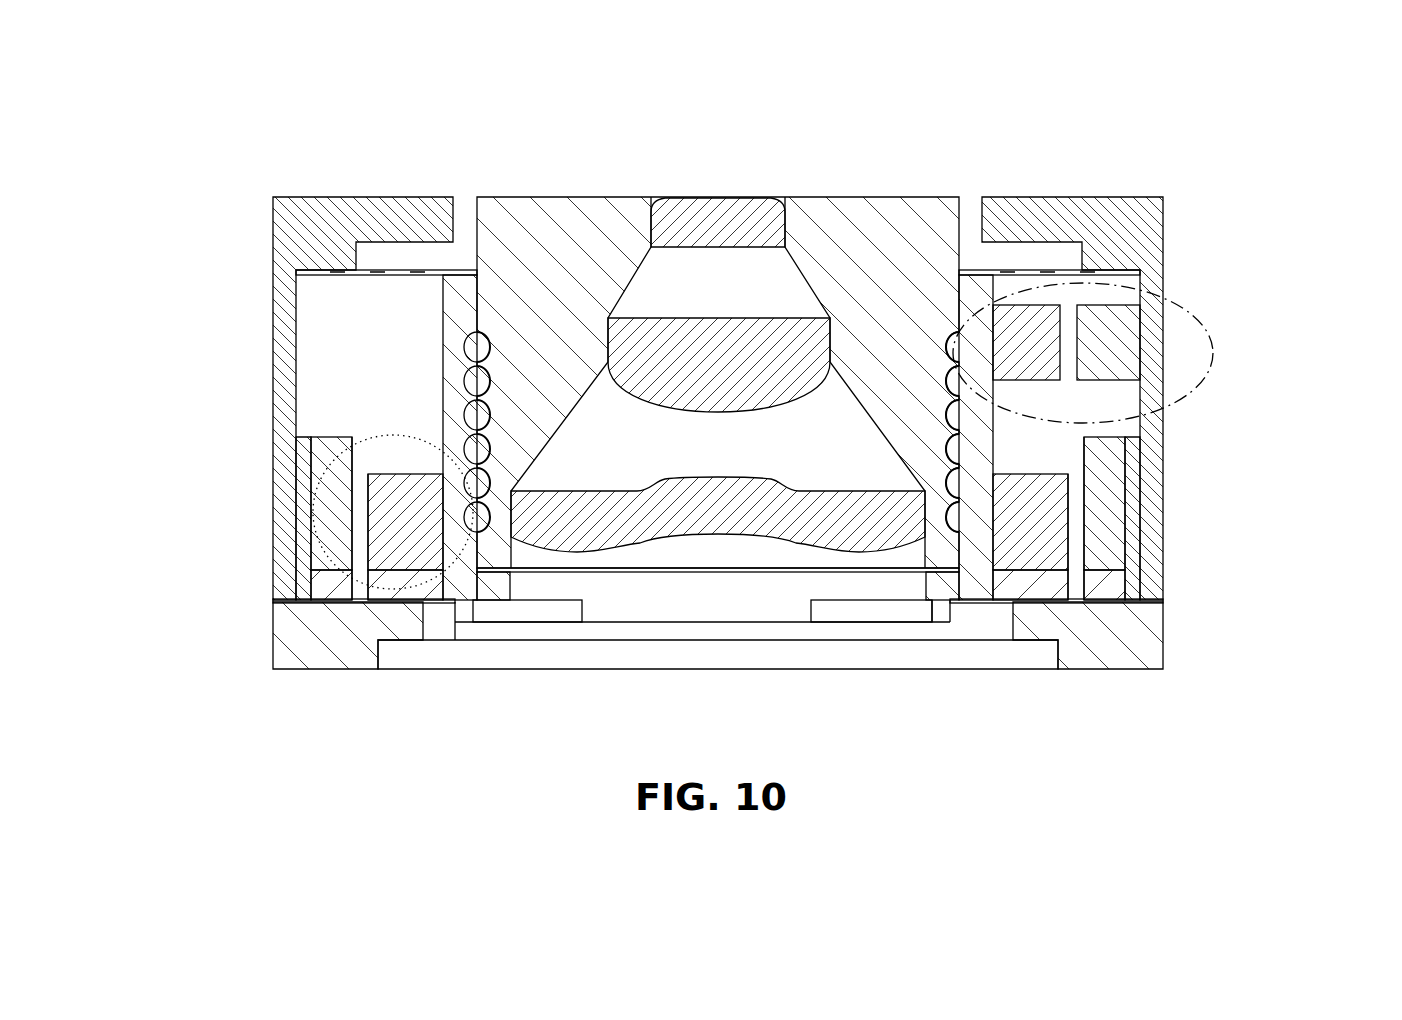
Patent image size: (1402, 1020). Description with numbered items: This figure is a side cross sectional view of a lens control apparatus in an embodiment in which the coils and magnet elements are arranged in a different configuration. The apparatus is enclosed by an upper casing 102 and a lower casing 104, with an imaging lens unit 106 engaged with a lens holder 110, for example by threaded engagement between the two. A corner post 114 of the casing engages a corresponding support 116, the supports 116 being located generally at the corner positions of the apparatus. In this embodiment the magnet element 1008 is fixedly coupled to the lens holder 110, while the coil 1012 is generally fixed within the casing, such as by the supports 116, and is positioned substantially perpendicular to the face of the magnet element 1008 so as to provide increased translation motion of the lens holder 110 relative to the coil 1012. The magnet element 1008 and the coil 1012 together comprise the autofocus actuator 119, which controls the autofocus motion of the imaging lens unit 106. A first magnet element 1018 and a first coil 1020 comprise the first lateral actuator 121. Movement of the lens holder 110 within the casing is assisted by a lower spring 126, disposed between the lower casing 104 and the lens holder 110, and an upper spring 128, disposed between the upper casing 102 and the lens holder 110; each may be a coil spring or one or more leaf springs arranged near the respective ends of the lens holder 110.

The upper casing 102 is at (345, 227).
The lower casing 104 is at (972, 655).
The imaging lens unit 106 is at (840, 237).
The lens holder 110 is at (467, 357).
The corner post 114 is at (322, 630).
The support 116 is at (300, 447).
The autofocus actuator 119 is at (377, 436).
The first lateral actuator 121 is at (1172, 302).
The lower spring 126 is at (1073, 600).
The upper spring 128 is at (1028, 272).
The magnet element 1008 is at (390, 495).
The coil 1012 is at (320, 462).
The first magnet element 1018 is at (1040, 323).
The first coil 1020 is at (1116, 347).